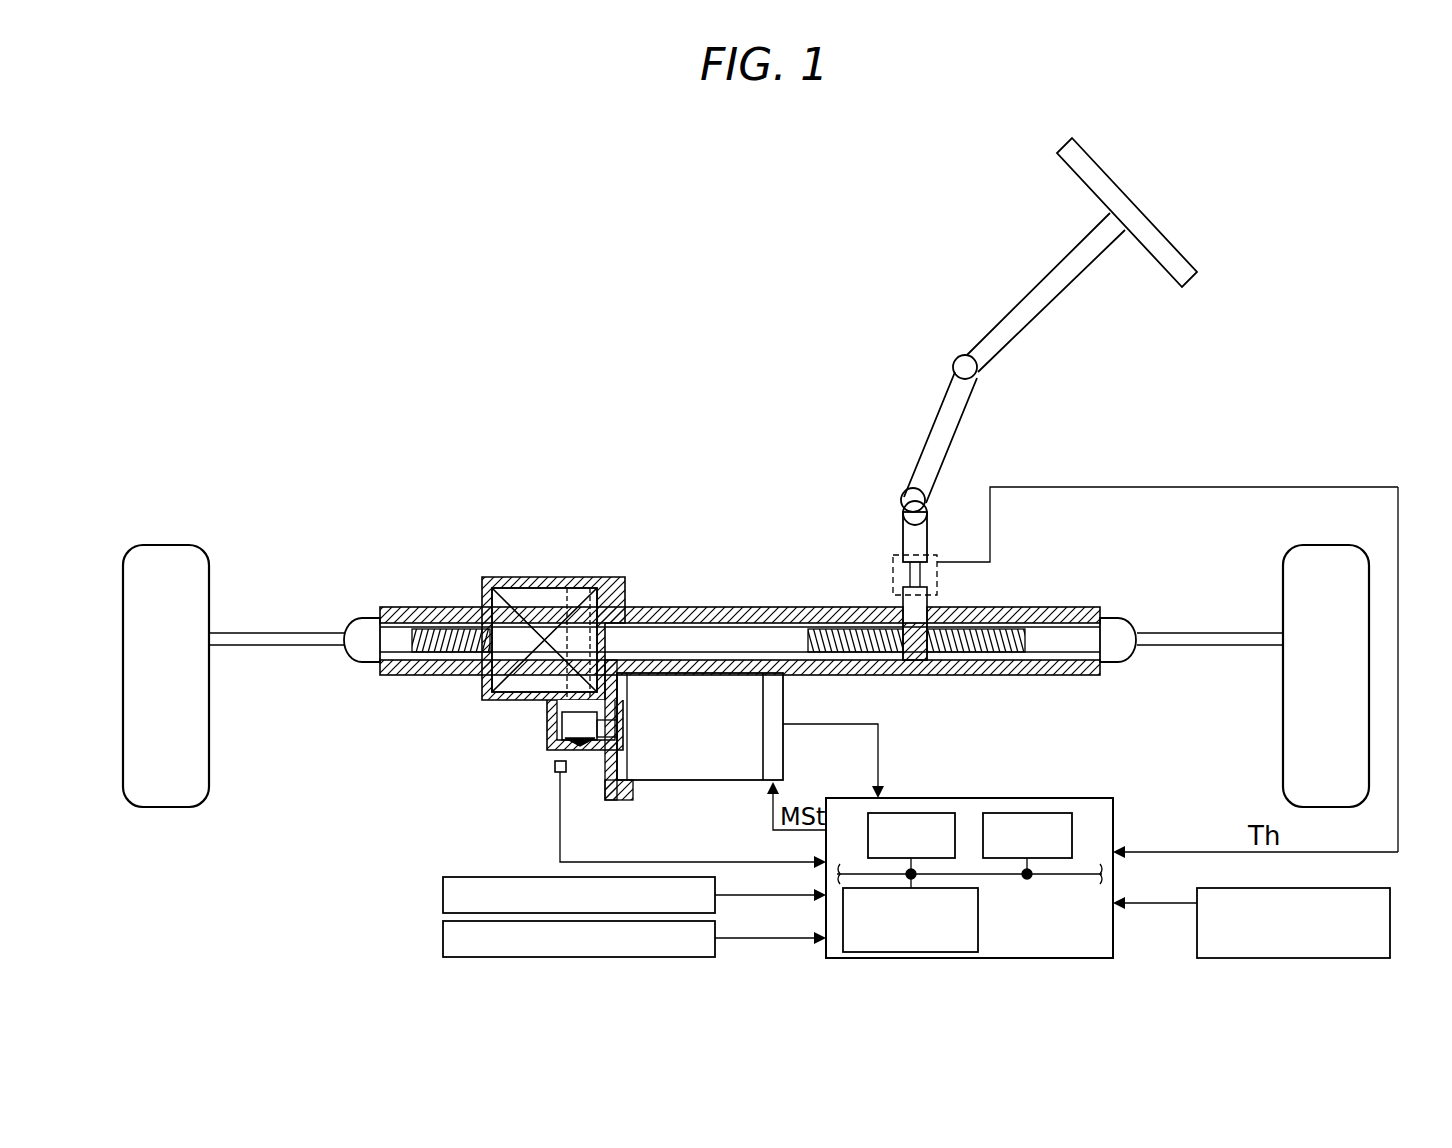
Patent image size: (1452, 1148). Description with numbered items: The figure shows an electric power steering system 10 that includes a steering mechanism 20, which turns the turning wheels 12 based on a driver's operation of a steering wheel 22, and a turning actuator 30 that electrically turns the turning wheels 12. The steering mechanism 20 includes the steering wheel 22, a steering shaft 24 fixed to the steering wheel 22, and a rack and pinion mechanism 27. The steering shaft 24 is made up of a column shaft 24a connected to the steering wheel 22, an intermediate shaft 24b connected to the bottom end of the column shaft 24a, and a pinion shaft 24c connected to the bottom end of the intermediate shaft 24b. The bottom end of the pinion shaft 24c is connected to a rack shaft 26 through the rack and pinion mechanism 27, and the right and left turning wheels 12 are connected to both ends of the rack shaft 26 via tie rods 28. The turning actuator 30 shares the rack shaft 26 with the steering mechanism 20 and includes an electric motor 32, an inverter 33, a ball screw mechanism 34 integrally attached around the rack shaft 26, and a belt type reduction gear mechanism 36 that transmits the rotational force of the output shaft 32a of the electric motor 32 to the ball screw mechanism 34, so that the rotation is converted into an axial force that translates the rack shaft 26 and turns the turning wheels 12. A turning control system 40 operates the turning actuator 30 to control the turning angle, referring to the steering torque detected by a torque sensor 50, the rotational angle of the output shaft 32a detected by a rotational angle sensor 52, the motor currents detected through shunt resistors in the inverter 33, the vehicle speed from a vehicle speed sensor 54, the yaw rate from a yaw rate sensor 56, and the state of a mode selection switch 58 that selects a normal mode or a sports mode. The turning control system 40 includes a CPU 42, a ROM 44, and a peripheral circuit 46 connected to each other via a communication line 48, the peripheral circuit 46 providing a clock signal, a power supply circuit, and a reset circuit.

The electric power steering system 10 is at (1290, 207).
The turning wheels 12 is at (165, 548).
The steering mechanism 20 is at (630, 320).
The steering wheel 22 is at (1172, 226).
The steering shaft 24 is at (1008, 247).
The column shaft 24a is at (1045, 282).
The intermediate shaft 24b is at (940, 428).
The pinion shaft 24c is at (905, 530).
The rack shaft 26 is at (1053, 660).
The rack and pinion mechanism 27 is at (940, 686).
The tie rods 28 is at (302, 648).
The turning actuator 30 is at (484, 528).
The electric motor 32 is at (663, 782).
The output shaft 32a is at (600, 770).
The inverter 33 is at (777, 762).
The ball screw mechanism 34 is at (498, 652).
The belt type reduction gear mechanism 36 is at (532, 722).
The turning control system 40 is at (1098, 798).
The CPU 42 is at (915, 813).
The ROM 44 is at (1030, 813).
The peripheral circuit 46 is at (978, 918).
The communication line 48 is at (1075, 876).
The torque sensor 50 is at (935, 553).
The rotational angle sensor 52 is at (552, 768).
The vehicle speed sensor 54 is at (443, 895).
The yaw rate sensor 56 is at (443, 938).
The mode selection switch 58 is at (1390, 910).